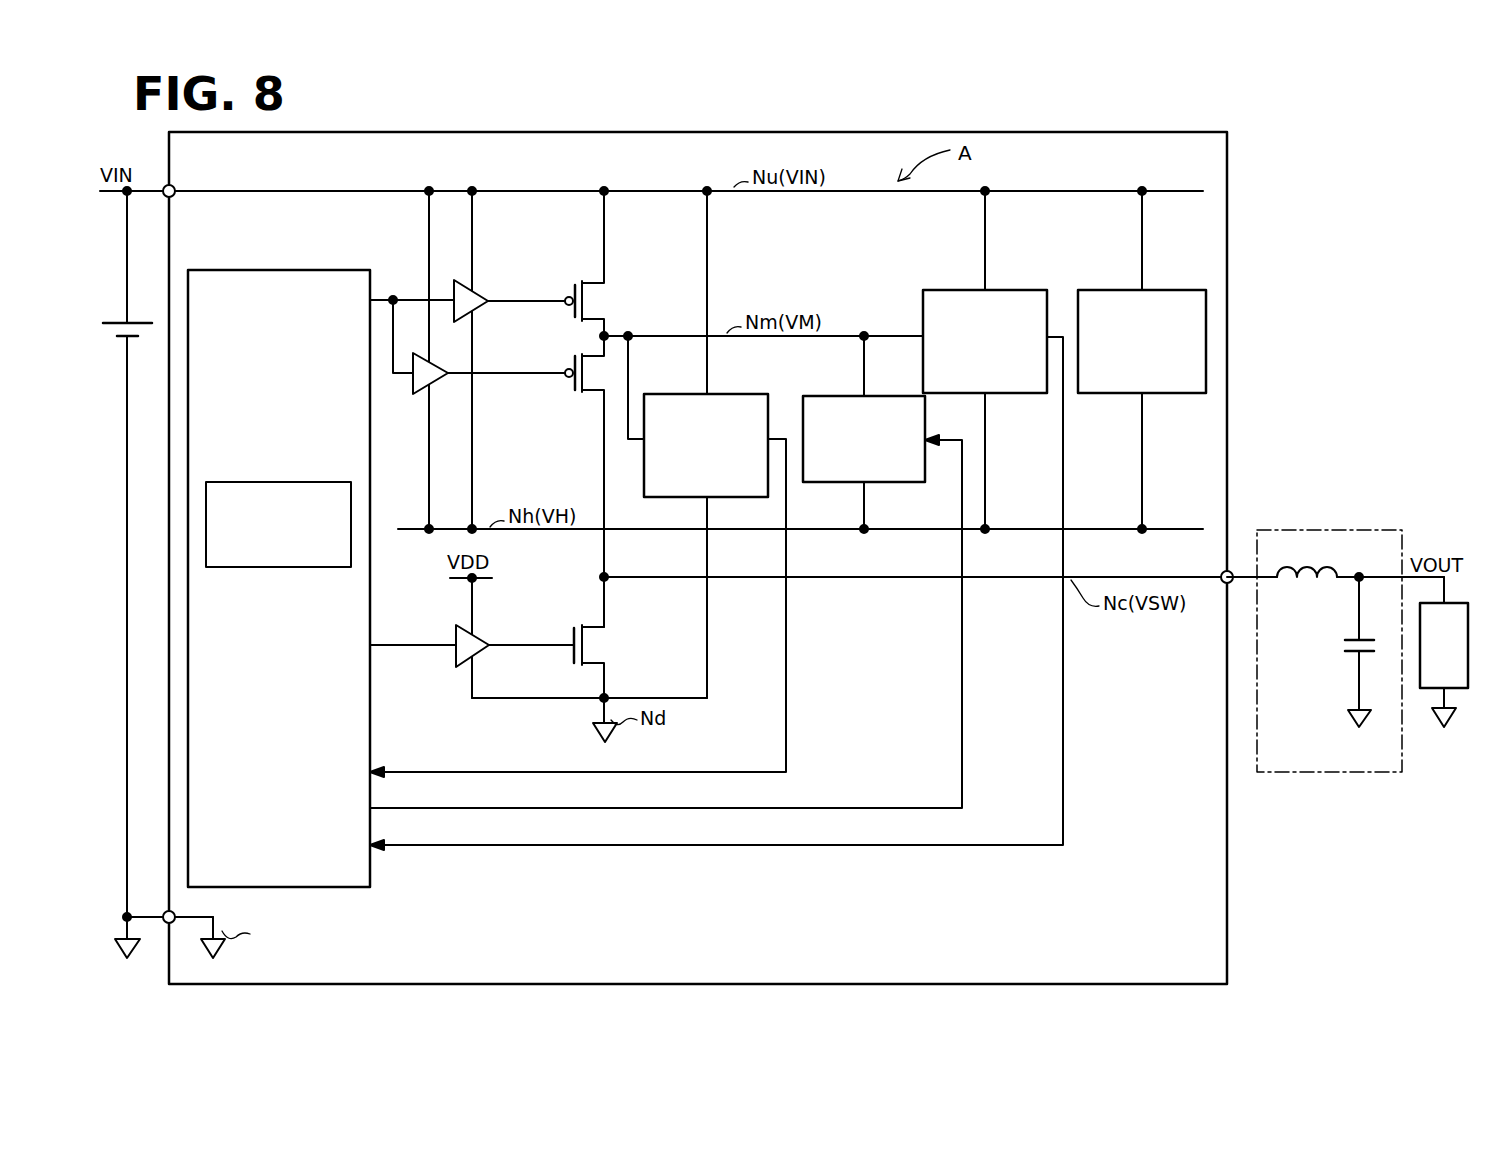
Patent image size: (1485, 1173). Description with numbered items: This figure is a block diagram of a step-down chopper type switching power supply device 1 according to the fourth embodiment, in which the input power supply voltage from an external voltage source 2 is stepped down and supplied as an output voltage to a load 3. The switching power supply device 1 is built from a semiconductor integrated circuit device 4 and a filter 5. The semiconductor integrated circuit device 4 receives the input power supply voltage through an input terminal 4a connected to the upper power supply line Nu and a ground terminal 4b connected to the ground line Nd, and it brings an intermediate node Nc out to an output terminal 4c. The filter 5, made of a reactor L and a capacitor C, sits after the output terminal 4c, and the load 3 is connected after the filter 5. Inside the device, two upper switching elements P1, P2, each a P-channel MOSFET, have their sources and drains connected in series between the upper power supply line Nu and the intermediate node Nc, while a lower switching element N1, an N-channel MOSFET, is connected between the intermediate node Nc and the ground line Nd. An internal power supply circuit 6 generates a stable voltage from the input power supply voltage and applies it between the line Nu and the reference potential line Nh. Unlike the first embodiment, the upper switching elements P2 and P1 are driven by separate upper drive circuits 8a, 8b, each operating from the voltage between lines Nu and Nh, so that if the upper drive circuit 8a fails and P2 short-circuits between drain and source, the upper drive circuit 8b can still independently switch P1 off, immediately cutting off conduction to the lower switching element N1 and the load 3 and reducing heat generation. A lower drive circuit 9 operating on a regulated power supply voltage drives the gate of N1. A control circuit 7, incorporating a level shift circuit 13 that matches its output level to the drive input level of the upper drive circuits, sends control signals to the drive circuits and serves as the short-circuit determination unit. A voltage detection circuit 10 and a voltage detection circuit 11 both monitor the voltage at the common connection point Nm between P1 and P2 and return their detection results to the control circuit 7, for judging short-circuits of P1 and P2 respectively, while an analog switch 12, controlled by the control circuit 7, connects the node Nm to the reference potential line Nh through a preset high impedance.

The switching power supply device 1 is at (1298, 183).
The voltage source 2 is at (119, 322).
The load 3 is at (1422, 690).
The semiconductor integrated circuit device 4 is at (664, 130).
The input terminal 4a is at (166, 188).
The ground terminal 4b is at (164, 916).
The output terminal 4c is at (1230, 568).
The filter 5 is at (1361, 528).
The internal power supply circuit 6 is at (1166, 288).
The control circuit 7 is at (283, 268).
The upper drive circuit 8a is at (485, 289).
The upper drive circuit 8b is at (410, 388).
The lower drive circuit 9 is at (452, 632).
The voltage detection circuit 10 is at (736, 394).
The voltage detection circuit 11 is at (1016, 288).
The analog switch 12 is at (889, 394).
The level shift circuit 13 is at (278, 480).
The upper switching element P1 is at (576, 400).
The upper switching element P2 is at (613, 300).
The lower switching element N1 is at (611, 643).
The reactor L is at (1302, 586).
The capacitor C is at (1340, 652).